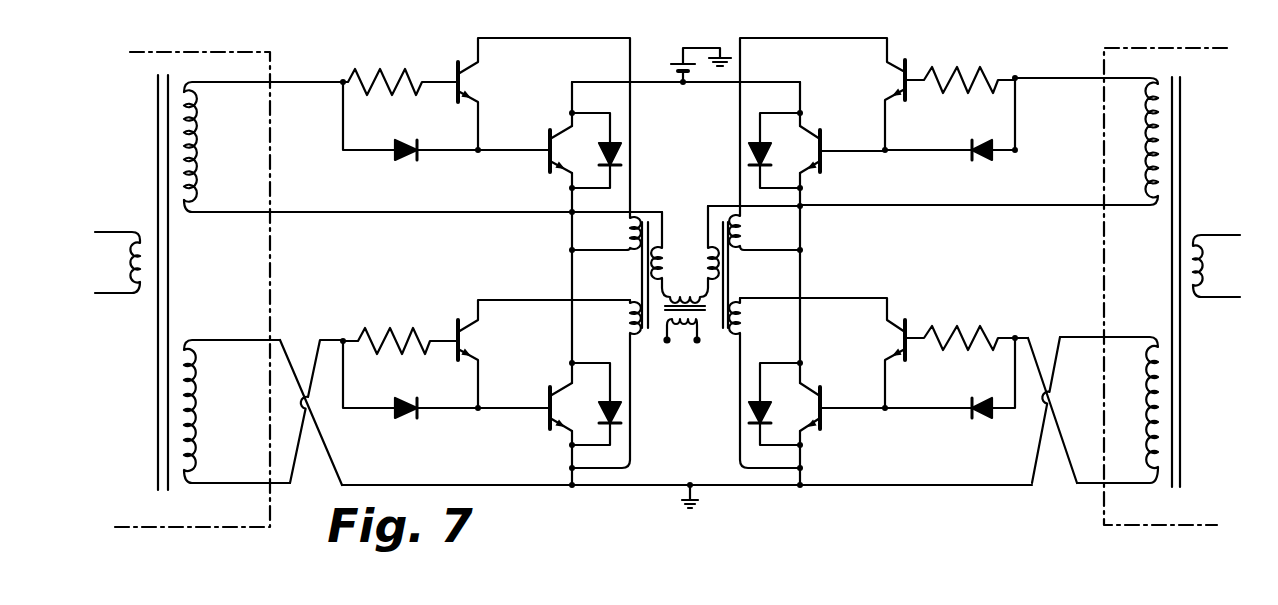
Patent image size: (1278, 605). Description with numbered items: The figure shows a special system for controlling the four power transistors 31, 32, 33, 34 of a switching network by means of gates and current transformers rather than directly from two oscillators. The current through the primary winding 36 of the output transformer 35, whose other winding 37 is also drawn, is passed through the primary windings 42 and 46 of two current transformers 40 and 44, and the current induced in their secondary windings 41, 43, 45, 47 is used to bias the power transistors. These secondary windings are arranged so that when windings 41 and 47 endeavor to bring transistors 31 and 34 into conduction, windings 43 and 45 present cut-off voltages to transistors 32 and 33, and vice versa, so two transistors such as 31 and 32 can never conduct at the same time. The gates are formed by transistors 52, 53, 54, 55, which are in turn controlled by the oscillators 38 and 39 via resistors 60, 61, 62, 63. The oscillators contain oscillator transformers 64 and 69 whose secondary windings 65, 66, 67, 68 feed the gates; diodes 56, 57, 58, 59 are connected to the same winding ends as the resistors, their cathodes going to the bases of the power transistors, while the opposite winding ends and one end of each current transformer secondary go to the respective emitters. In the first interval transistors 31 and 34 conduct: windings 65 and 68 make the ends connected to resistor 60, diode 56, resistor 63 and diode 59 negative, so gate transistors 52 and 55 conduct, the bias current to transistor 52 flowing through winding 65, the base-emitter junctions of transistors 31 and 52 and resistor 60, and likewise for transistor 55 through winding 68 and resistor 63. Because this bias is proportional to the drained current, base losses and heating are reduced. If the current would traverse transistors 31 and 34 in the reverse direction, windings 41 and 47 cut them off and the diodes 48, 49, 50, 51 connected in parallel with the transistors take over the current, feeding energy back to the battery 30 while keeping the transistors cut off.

The battery 30 is at (677, 61).
The transistor 31 is at (548, 136).
The transistor 32 is at (548, 395).
The transistor 33 is at (823, 140).
The transistor 34 is at (825, 392).
The output transformer 35 is at (665, 312).
The primary winding 36 is at (682, 292).
The output winding 37 is at (683, 324).
The oscillator 38 is at (272, 62).
The oscillator 39 is at (1100, 55).
The current transformer 40 is at (642, 270).
The secondary winding 41 is at (627, 233).
The primary winding 42 is at (662, 253).
The secondary winding 43 is at (625, 315).
The current transformer 44 is at (728, 292).
The secondary winding 45 is at (742, 238).
The primary winding 46 is at (713, 268).
The secondary winding 47 is at (745, 313).
The diode 48 is at (622, 142).
The diode 49 is at (623, 412).
The diode 50 is at (747, 148).
The diode 51 is at (750, 409).
The transistor 52 is at (462, 68).
The transistor 53 is at (458, 325).
The transistor 54 is at (908, 64).
The transistor 55 is at (908, 323).
The diode 56 is at (399, 141).
The diode 57 is at (399, 400).
The diode 58 is at (986, 131).
The diode 59 is at (975, 393).
The resistor 60 is at (385, 70).
The resistor 61 is at (390, 327).
The resistor 62 is at (980, 70).
The resistor 63 is at (957, 330).
The oscillator transformer 64 is at (155, 108).
The secondary winding 65 is at (202, 153).
The secondary winding 66 is at (202, 412).
The secondary winding 67 is at (1143, 145).
The secondary winding 68 is at (1143, 393).
The oscillator transformer 69 is at (1182, 90).